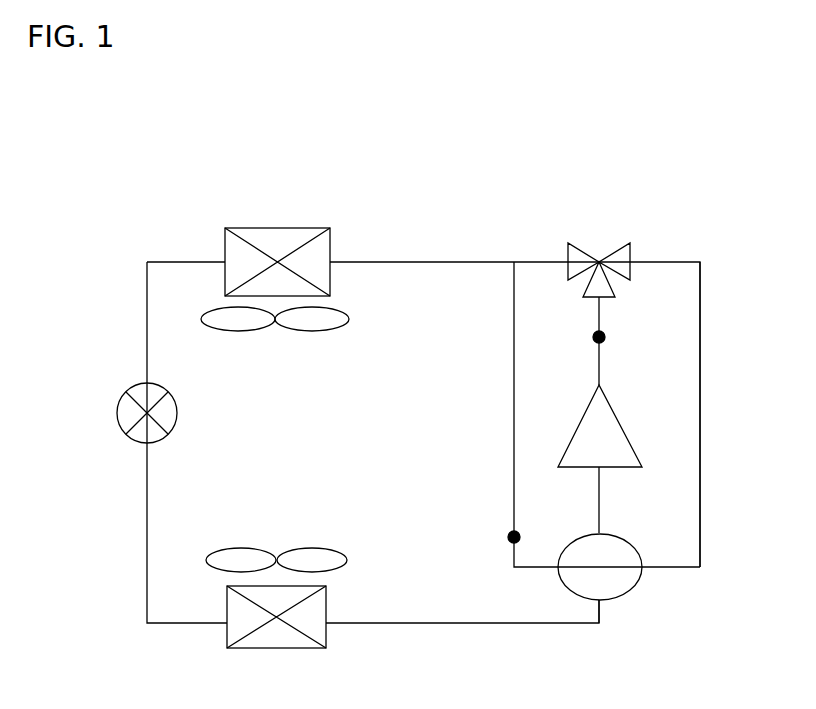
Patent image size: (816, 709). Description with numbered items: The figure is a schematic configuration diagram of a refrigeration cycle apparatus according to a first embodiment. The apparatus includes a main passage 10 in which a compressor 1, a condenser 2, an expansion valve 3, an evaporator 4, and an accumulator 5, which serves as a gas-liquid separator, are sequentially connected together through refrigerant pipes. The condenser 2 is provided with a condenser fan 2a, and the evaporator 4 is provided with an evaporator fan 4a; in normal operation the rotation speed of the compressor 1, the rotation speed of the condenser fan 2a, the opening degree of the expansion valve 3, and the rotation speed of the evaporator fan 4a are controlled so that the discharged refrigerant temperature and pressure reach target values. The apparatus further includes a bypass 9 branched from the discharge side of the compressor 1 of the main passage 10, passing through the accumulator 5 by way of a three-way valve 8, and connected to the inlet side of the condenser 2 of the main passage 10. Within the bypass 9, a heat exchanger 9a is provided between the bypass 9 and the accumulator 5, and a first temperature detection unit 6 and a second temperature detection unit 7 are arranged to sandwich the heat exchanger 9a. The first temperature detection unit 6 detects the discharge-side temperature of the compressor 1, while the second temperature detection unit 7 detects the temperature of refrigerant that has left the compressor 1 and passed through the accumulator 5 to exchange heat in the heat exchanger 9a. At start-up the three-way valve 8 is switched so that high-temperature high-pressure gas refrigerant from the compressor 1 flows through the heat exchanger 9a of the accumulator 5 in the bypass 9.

The compressor 1 is at (616, 418).
The condenser 2 is at (312, 228).
The condenser fan 2a is at (313, 330).
The expansion valve 3 is at (177, 405).
The evaporator 4 is at (326, 596).
The evaporator fan 4a is at (312, 548).
The accumulator 5 is at (636, 548).
The first temperature detection unit 6 is at (606, 337).
The second temperature detection unit 7 is at (508, 533).
The three-way valve 8 is at (630, 250).
The bypass 9 is at (700, 290).
The heat exchanger 9a is at (613, 570).
The main passage 10 is at (403, 262).